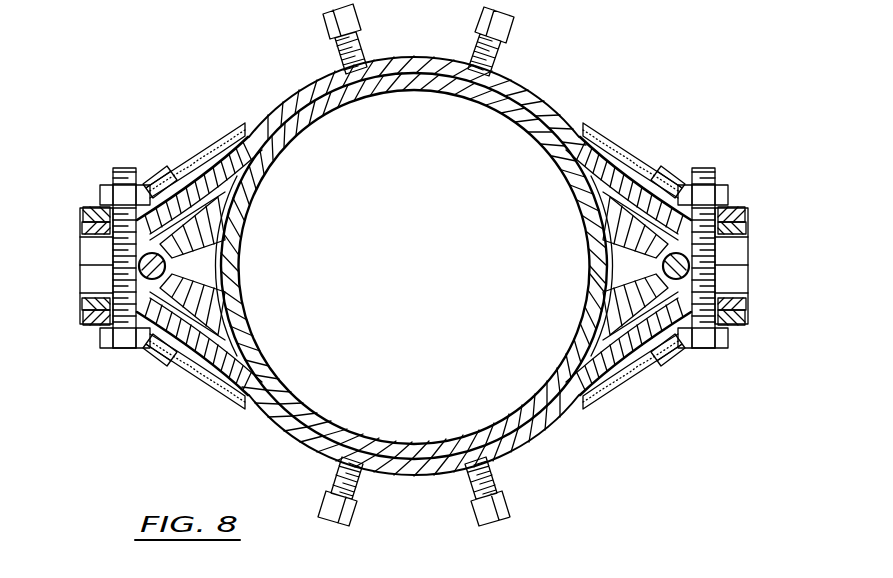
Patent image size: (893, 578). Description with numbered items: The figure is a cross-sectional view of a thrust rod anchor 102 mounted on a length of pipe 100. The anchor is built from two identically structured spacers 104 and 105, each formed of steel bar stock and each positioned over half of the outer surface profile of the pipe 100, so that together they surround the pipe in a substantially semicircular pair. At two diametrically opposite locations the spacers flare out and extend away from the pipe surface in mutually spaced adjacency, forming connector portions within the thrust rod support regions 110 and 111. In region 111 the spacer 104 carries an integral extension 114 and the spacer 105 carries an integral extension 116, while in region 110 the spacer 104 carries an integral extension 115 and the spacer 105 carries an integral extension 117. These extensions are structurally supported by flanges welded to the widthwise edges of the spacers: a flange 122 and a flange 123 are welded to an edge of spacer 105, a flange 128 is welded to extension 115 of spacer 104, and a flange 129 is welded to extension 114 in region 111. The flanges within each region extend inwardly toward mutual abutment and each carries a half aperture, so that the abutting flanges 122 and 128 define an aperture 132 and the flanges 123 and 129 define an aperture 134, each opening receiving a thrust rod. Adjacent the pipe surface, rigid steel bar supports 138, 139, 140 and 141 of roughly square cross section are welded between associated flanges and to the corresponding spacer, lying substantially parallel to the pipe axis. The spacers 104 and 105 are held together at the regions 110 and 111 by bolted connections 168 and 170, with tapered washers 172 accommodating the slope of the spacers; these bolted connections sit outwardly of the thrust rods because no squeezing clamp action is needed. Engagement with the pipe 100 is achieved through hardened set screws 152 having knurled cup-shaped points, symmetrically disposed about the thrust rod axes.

The pipe segment 100 is at (307, 131).
The thrust rod anchor 102 is at (414, 265).
The spacer 104 is at (518, 92).
The spacer 105 is at (427, 472).
The thrust rod support region 110 is at (153, 115).
The thrust rod support region 111 is at (738, 92).
The integral extension 114 is at (752, 228).
The integral extension 115 is at (82, 228).
The integral extension 116 is at (752, 306).
The integral extension 117 is at (84, 303).
The flange 122 is at (217, 385).
The flange 123 is at (613, 383).
The flange 128 is at (217, 148).
The flange 129 is at (612, 152).
The aperture 132 is at (100, 263).
The aperture 134 is at (712, 264).
The steel bar support 138 is at (608, 246).
The steel bar support 139 is at (220, 237).
The steel bar support 140 is at (608, 294).
The steel bar support 141 is at (222, 287).
The set screw 152 is at (163, 170).
The bolted connection 168 is at (122, 168).
The bolted connection 170 is at (708, 190).
The tapered washer 172 is at (95, 207).